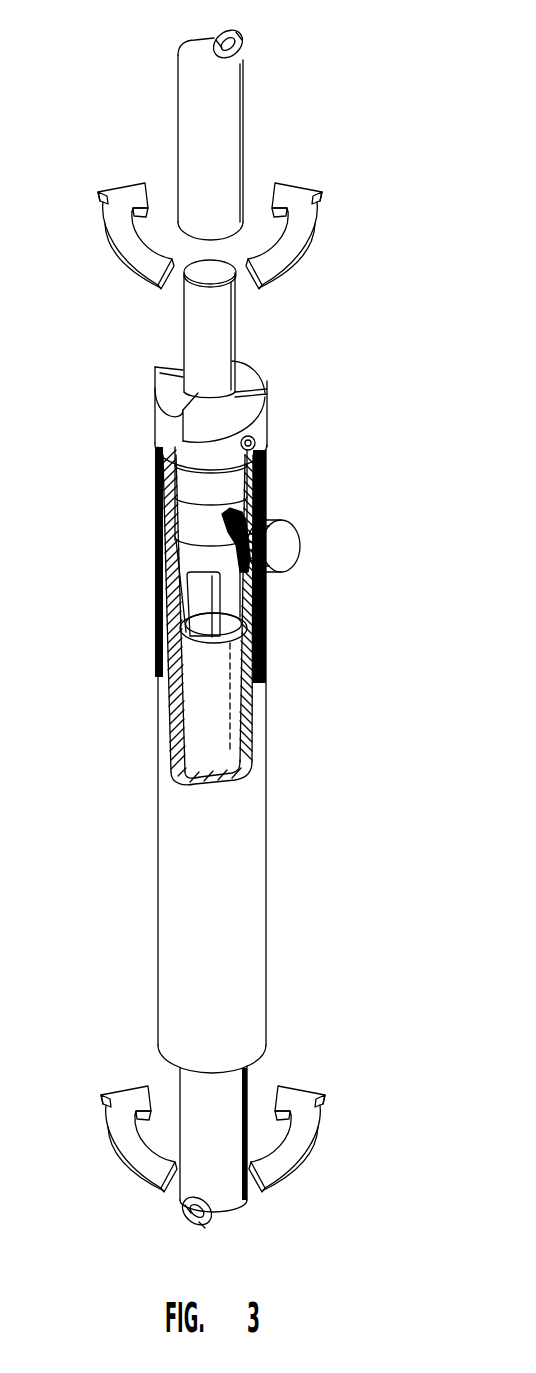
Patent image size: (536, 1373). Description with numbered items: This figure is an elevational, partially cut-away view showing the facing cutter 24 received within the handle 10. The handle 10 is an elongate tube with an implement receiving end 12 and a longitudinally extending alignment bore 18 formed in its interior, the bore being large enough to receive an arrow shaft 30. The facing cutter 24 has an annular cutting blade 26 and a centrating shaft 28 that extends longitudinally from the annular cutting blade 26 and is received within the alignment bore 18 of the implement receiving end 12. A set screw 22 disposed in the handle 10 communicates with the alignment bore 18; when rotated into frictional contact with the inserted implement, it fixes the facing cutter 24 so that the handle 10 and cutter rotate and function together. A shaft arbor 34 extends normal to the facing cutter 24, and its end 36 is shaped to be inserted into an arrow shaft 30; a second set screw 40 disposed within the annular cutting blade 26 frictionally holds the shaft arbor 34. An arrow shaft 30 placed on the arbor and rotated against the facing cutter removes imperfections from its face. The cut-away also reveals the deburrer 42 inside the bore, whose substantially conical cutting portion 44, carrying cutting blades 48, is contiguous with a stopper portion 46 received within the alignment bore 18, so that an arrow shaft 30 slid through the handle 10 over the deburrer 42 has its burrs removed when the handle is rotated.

The handle 10 is at (268, 713).
The implement receiving end 12 is at (155, 469).
The alignment bore 18 is at (157, 630).
The set screw 22 is at (273, 522).
The facing cutter 24 is at (280, 418).
The annular cutting blade 26 is at (257, 383).
The centrating shaft 28 is at (207, 510).
The arrow shaft 30 is at (223, 143).
The shaft arbor 34 is at (223, 325).
The end of shaft arbor 36 is at (197, 268).
The set screw 40 is at (257, 444).
The deburrer 42 is at (264, 614).
The conical cutting portion 44 is at (183, 555).
The stopper portion 46 is at (157, 499).
The cutting blades 48 is at (160, 675).